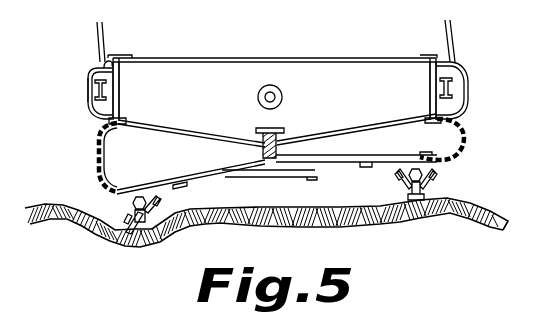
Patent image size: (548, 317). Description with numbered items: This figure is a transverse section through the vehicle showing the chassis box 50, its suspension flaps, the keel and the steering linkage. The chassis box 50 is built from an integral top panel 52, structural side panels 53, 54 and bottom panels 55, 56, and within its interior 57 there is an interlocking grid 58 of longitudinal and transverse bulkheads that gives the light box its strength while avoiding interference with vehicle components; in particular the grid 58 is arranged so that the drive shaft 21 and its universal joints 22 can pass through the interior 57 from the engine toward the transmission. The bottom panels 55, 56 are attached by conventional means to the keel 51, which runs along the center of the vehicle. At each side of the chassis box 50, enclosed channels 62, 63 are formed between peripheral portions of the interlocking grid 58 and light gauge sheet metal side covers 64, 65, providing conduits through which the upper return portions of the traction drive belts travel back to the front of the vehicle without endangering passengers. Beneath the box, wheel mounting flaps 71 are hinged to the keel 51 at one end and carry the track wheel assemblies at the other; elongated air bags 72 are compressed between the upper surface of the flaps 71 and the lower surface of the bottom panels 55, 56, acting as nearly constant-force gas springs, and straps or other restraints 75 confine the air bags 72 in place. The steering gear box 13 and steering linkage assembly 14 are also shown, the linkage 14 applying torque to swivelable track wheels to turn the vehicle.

The steering gear box 13 is at (272, 168).
The steering linkage assembly 14 is at (320, 187).
The drive shaft 21 is at (268, 96).
The universal joints 22 is at (283, 97).
The chassis box 50 is at (106, 64).
The keel 51 is at (258, 130).
The top panel 52 is at (183, 60).
The structural side panel 53 is at (428, 77).
The structural side panel 54 is at (120, 80).
The bottom panel 55 is at (388, 121).
The bottom panel 56 is at (163, 127).
The interior 57 is at (274, 90).
The interlocking grid 58 is at (284, 70).
The enclosed channel 62 is at (453, 62).
The enclosed channel 63 is at (100, 72).
The side cover 64 is at (463, 80).
The side cover 65 is at (89, 91).
The wheel mounting flap 71 is at (142, 188).
The air bag 72 is at (119, 150).
The restraint 75 is at (100, 143).